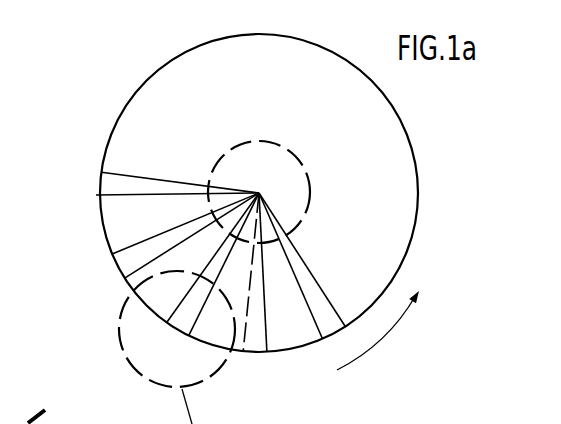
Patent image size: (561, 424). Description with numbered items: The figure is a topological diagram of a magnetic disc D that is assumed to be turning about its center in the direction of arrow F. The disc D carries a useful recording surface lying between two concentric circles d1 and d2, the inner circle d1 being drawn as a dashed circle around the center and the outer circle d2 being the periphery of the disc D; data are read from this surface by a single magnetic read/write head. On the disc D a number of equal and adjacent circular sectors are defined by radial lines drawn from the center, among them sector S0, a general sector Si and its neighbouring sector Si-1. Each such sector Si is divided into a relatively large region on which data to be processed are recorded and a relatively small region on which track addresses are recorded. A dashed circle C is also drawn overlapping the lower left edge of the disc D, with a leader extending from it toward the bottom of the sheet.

The magnetic disc D is at (284, 193).
The concentric circle d2 is at (121, 118).
The concentric circle d1 is at (223, 163).
The circular sector Si is at (128, 289).
The circular sector Si-1 is at (237, 356).
The circular sector S0 is at (294, 351).
The scanning circle C is at (118, 333).
The arrow F is at (378, 330).